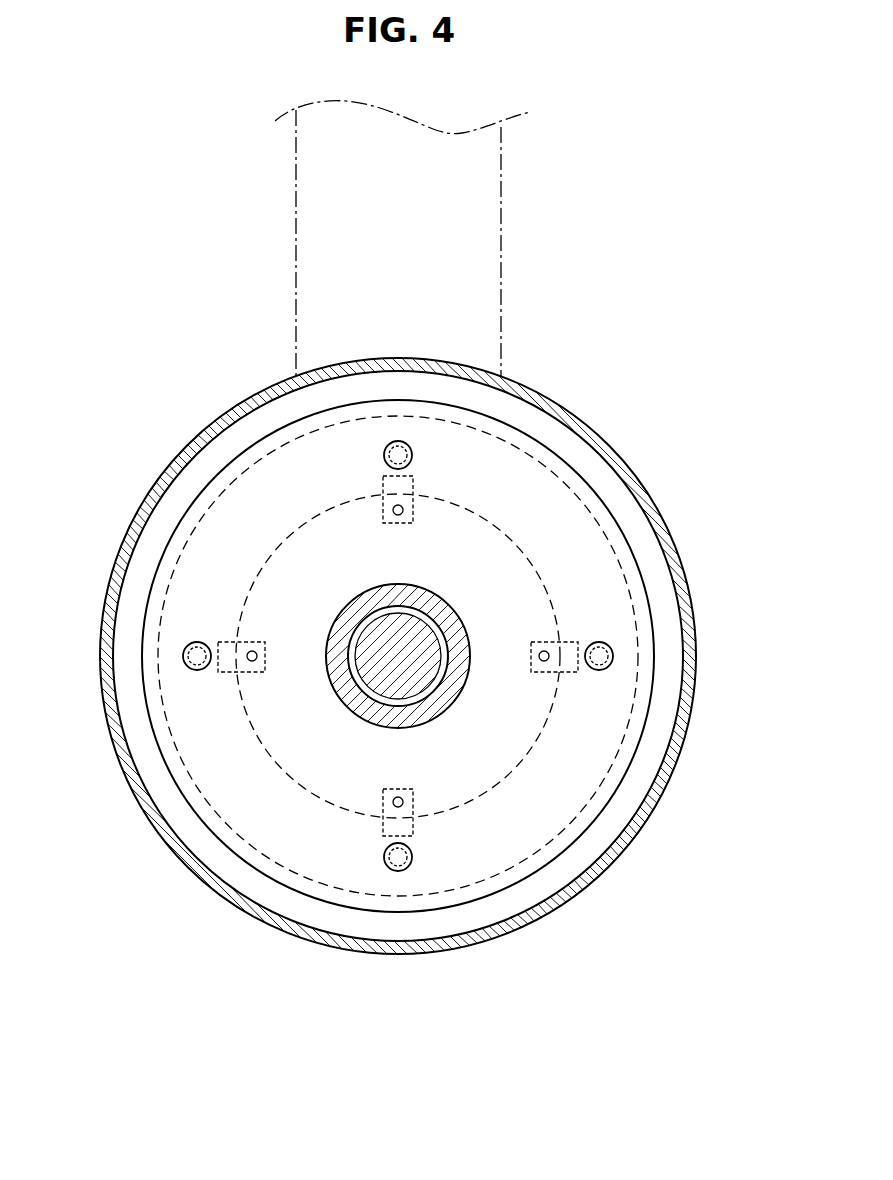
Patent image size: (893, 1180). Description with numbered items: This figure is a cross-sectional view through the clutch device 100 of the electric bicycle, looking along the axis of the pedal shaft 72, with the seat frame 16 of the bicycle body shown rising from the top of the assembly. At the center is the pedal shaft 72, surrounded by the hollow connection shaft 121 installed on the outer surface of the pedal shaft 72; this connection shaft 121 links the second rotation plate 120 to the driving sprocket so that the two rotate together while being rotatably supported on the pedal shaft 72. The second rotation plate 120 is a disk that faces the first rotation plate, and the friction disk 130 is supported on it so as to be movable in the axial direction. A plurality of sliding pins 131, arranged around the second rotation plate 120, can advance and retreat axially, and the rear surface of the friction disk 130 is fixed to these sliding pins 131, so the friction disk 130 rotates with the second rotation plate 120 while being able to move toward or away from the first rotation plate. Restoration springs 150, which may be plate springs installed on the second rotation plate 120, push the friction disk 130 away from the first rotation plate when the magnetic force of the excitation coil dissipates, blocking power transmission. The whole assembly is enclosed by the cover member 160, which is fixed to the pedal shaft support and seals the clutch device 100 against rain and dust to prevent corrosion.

The seat frame 16 is at (490, 257).
The clutch device 100 is at (424, 646).
The cover member 160 is at (663, 525).
The second rotation plate 120 is at (650, 654).
The friction disk 130 is at (628, 722).
The sliding pins 131 is at (187, 649).
The restoration spring 150 is at (232, 642).
The hollow connection shaft 121 is at (347, 697).
The pedal shaft 72 is at (410, 668).